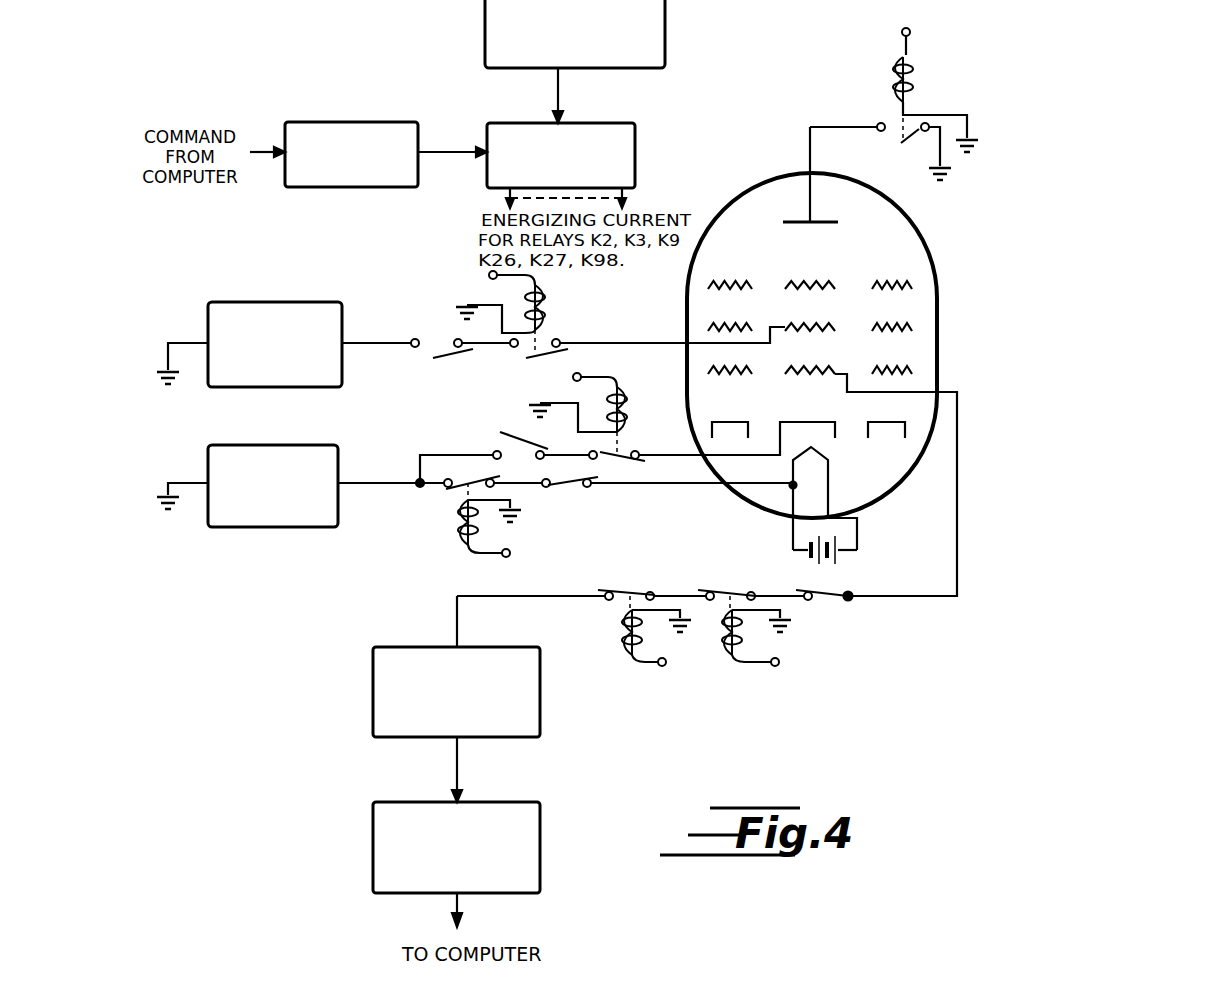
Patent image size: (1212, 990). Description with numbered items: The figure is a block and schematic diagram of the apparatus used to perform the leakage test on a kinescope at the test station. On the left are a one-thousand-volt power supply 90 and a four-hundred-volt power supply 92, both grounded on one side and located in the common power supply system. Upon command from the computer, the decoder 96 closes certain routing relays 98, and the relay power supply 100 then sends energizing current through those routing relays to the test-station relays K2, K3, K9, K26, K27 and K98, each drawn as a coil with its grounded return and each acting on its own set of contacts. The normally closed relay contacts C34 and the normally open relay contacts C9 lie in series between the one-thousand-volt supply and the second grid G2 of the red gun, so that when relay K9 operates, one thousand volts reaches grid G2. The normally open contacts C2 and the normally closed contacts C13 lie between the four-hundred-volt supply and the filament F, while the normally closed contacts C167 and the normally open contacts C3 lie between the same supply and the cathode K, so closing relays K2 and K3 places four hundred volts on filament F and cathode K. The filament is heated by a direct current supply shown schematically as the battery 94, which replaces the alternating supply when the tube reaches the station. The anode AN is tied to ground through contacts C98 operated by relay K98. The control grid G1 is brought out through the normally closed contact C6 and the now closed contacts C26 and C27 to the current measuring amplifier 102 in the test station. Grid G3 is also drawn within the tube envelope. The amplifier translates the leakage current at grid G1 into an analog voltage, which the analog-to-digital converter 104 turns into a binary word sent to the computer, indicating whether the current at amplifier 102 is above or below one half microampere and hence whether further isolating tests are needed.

The 1000 volt power supply 90 is at (306, 302).
The 400 volt power supply 92 is at (280, 445).
The battery 94 is at (857, 550).
The decoder 96 is at (364, 122).
The routing relays 98 is at (635, 146).
The relay power supply 100 is at (696, 3).
The current measuring amplifier 102 is at (373, 680).
The analog-to-digital converter 104 is at (373, 845).
The relay K98 is at (893, 93).
The relay contacts C98 is at (880, 151).
The anode AN is at (782, 221).
The grid rG3 G3 is at (823, 285).
The second grid rG2 G2 is at (823, 327).
The control grid rG1 G1 is at (823, 370).
The cathode rK K is at (808, 421).
The filament F is at (829, 478).
The relay K9 is at (537, 323).
The normally closed relay contacts C34 is at (436, 366).
The normally open relay contacts C9 is at (532, 366).
The relay K3 is at (622, 383).
The normally open relay contacts C3 is at (623, 452).
The normally closed relay contacts C167 is at (498, 440).
The normally open relay contacts C2 is at (476, 478).
The normally closed relay contacts C13 is at (570, 488).
The relay K2 is at (460, 533).
The relay contacts C27 is at (636, 584).
The relay contacts C26 is at (730, 584).
The normally closed contact C6 is at (826, 600).
The relay K27 is at (632, 655).
The relay K26 is at (732, 655).